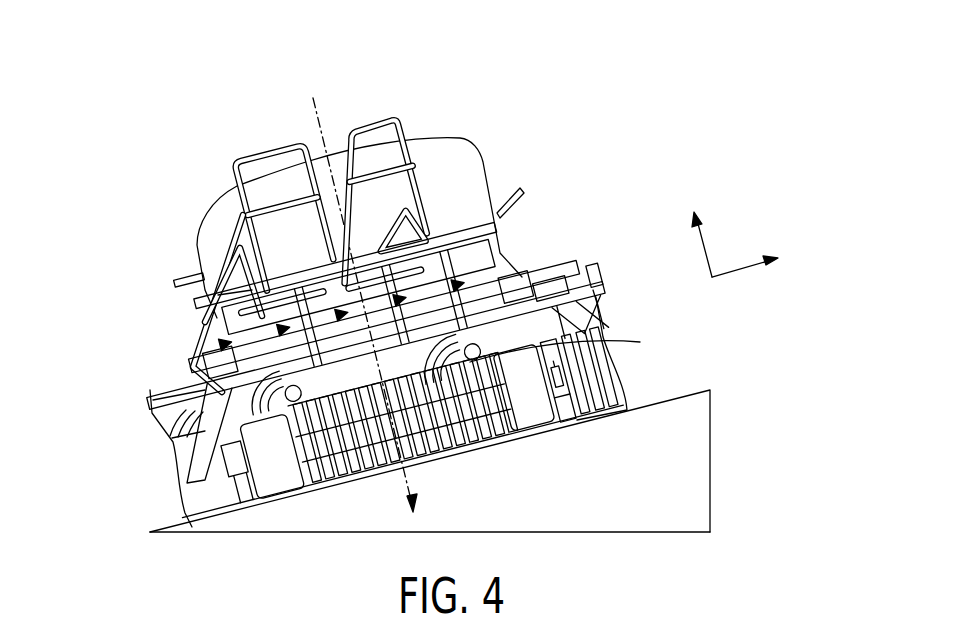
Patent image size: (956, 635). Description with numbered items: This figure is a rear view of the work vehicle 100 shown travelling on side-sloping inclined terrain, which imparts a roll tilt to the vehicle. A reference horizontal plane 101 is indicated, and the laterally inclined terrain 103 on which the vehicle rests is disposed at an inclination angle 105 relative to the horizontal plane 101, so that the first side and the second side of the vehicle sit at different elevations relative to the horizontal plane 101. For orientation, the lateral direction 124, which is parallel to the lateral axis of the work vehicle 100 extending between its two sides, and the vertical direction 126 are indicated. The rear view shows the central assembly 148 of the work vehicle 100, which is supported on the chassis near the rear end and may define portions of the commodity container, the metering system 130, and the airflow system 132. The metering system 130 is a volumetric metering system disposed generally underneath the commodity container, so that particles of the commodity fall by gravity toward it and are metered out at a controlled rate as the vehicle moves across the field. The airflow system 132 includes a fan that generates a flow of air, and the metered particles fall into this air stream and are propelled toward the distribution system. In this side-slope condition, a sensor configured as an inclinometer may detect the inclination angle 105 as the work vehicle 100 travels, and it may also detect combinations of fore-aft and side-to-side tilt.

The work vehicle 100 is at (187, 192).
The horizontal plane 101 is at (560, 533).
The sloped terrain 103 is at (710, 390).
The inclination angle 105 is at (514, 440).
The lateral direction 124 is at (737, 272).
The vertical direction 126 is at (705, 250).
The metering system 130 is at (361, 355).
The airflow system 132 is at (446, 438).
The central assembly 148 is at (450, 322).